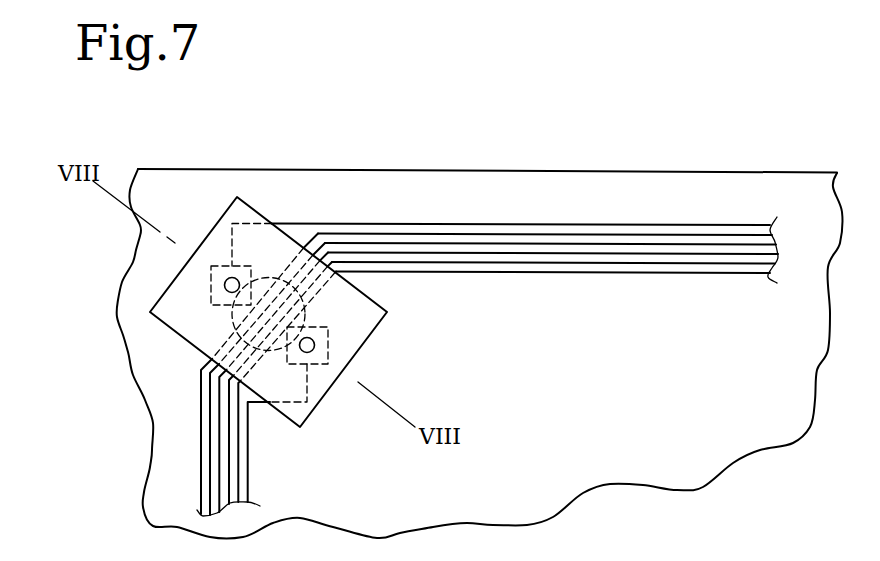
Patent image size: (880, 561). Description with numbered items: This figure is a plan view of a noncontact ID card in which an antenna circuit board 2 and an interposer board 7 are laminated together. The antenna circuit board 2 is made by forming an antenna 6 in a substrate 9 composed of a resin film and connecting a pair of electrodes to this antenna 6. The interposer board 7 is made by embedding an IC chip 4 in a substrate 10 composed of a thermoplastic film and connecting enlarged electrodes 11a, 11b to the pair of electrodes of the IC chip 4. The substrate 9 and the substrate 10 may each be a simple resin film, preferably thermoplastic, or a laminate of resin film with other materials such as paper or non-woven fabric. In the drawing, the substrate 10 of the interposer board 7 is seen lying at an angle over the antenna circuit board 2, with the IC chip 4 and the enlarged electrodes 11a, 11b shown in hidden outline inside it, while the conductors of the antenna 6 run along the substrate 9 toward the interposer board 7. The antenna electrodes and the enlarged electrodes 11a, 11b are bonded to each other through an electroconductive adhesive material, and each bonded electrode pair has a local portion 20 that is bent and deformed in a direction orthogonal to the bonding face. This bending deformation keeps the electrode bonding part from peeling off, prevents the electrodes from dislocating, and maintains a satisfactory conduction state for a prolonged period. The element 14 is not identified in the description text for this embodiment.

The antenna circuit board 2 is at (650, 171).
The IC chip 4 is at (266, 276).
The antenna 6 is at (660, 272).
The interposer board 7 is at (198, 348).
The substrate 9 is at (229, 182).
The substrate 10 is at (187, 262).
The enlarged electrode 11a is at (211, 286).
The enlarged electrode 11b is at (328, 364).
The conductive pattern 14 is at (328, 327).
The local portion 20 is at (233, 278).